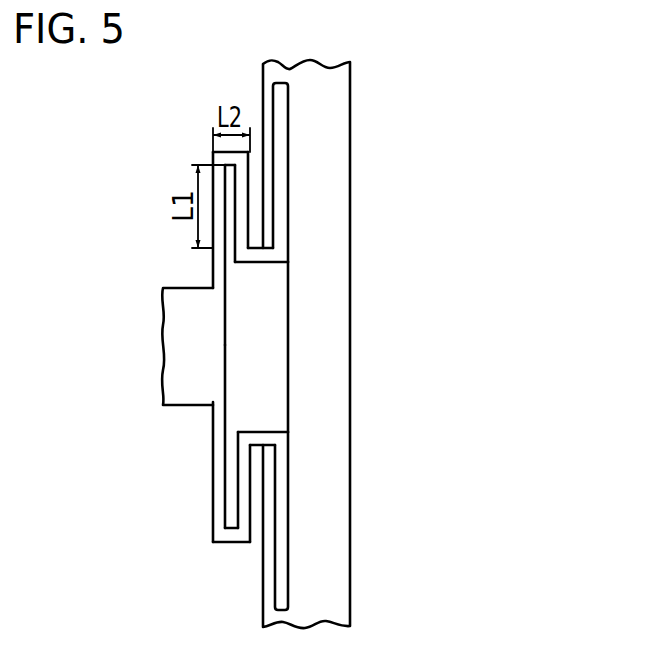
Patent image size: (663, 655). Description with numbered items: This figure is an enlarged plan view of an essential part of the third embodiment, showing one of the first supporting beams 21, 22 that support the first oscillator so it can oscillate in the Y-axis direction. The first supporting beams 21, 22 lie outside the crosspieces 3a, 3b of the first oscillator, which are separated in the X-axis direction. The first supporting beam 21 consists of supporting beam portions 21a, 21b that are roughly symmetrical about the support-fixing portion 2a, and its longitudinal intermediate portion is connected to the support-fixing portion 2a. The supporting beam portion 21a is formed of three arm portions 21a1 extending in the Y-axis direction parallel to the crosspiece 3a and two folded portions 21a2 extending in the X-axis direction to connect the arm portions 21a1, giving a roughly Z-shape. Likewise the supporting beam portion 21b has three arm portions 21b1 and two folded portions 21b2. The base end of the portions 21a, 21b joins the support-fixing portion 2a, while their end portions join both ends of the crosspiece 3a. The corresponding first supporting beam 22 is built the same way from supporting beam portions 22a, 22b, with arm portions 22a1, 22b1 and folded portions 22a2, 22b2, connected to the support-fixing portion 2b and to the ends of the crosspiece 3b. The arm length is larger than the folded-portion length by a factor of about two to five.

The first supporting beam 21 is at (285, 349).
The first supporting beam 22 is at (229, 550).
The supporting beam portion 21a is at (285, 208).
The supporting beam portion 22a is at (270, 112).
The arm portion 21a1 is at (285, 214).
The arm portion 22a1 is at (213, 257).
The folded portion 21a2 is at (287, 200).
The folded portion 22a2 is at (222, 156).
The supporting beam portion 21b is at (288, 477).
The supporting beam portion 22b is at (273, 558).
The arm portion 21b1 is at (288, 477).
The arm portion 22b1 is at (218, 458).
The folded portion 21b2 is at (287, 485).
The folded portion 22b2 is at (222, 538).
The support-fixing portion 2a is at (126, 346).
The support-fixing portion 2b is at (180, 347).
The crosspiece 3a is at (385, 344).
The crosspiece 3b is at (337, 346).